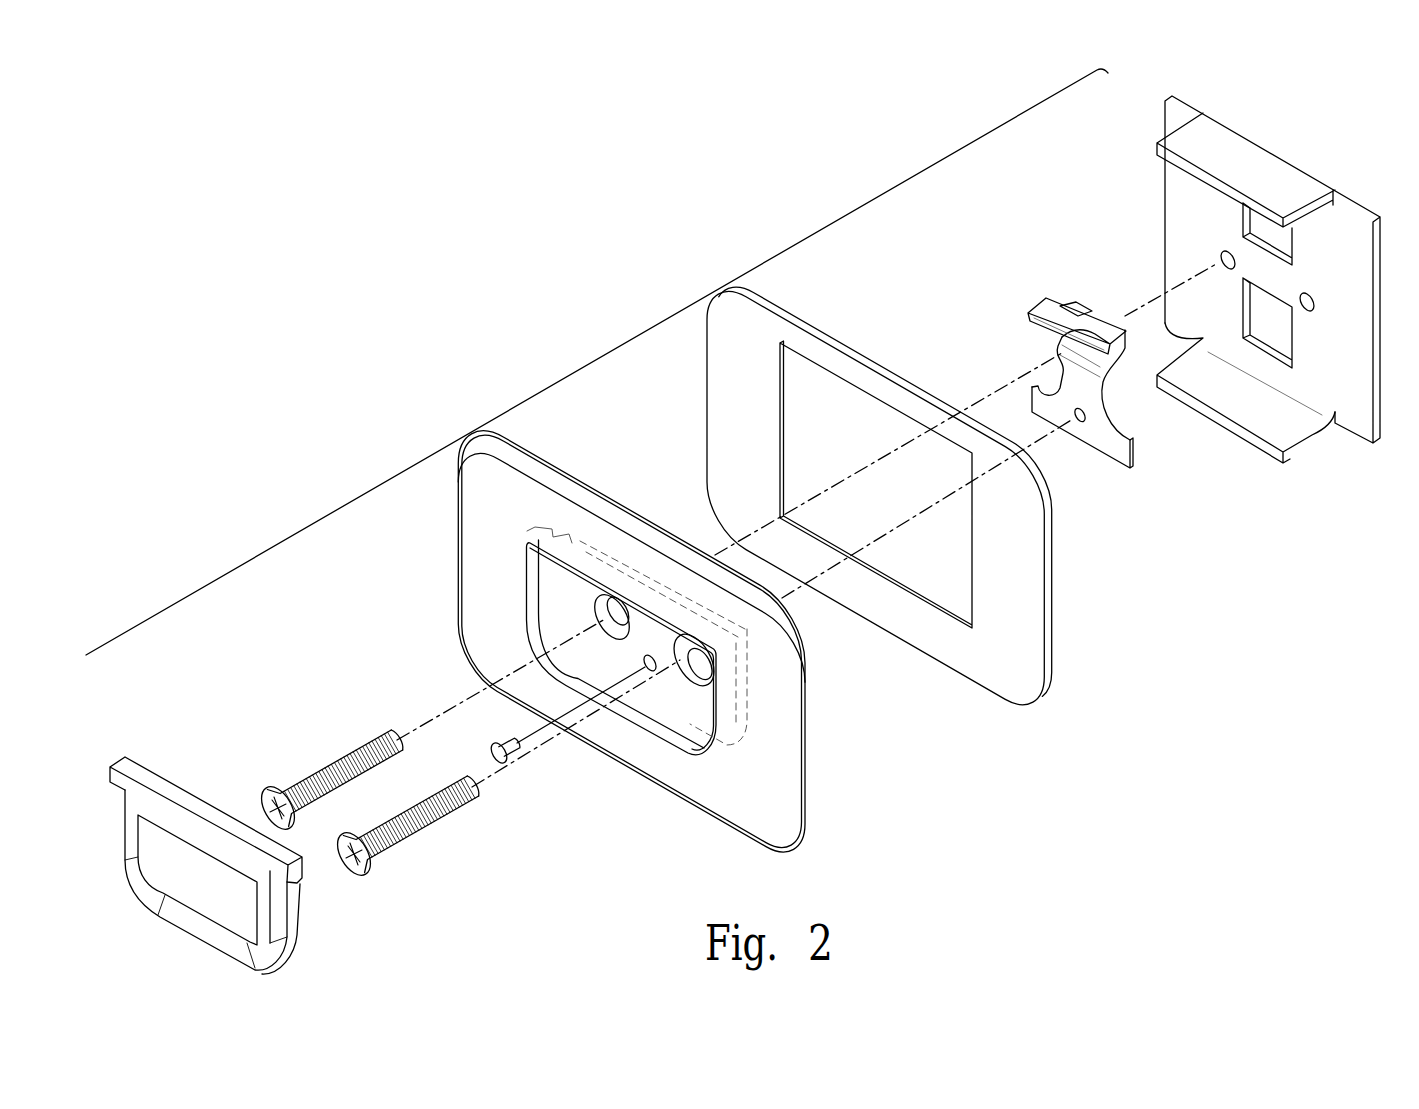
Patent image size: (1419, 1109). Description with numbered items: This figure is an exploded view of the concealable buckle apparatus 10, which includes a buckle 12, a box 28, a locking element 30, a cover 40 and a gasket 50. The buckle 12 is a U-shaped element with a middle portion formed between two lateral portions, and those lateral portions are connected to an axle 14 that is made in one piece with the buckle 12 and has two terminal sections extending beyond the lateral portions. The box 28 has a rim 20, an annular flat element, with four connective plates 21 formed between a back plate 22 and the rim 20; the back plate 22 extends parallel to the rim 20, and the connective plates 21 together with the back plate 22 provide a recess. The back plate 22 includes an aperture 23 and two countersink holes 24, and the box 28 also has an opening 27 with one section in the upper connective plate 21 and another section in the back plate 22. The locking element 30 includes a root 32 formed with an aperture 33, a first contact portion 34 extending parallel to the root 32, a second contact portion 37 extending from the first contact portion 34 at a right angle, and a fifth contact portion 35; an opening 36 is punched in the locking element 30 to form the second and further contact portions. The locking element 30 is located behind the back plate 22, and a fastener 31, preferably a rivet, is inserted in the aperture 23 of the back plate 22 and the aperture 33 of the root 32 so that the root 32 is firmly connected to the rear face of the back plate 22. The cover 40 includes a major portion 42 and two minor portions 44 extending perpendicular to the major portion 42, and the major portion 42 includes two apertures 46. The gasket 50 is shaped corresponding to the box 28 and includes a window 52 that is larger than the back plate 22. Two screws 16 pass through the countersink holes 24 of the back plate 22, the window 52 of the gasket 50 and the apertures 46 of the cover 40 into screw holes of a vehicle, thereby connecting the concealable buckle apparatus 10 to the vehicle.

The concealable buckle apparatus 10 is at (605, 355).
The buckle 12 is at (220, 947).
The axle 14 is at (202, 810).
The screws 16 is at (325, 767).
The rim 20 is at (622, 649).
The connective plates 21 is at (673, 725).
The back plate 22 is at (570, 600).
The aperture 23 is at (650, 670).
The countersink holes 24 is at (717, 694).
The opening 27 is at (592, 558).
The box 28 is at (818, 793).
The locking element 30 is at (1081, 396).
The fastener 31 is at (513, 760).
The root 32 is at (1123, 447).
The aperture 33 is at (1080, 422).
The first contact portion 34 is at (1057, 345).
The fifth contact portion 35 is at (1042, 308).
The opening 36 is at (1080, 308).
The second contact portion 37 is at (1115, 357).
The cover 40 is at (1287, 353).
The major portion 42 is at (1377, 430).
The minor portions 44 is at (1288, 440).
The apertures 46 is at (1310, 310).
The gasket 50 is at (891, 557).
The window 52 is at (954, 588).